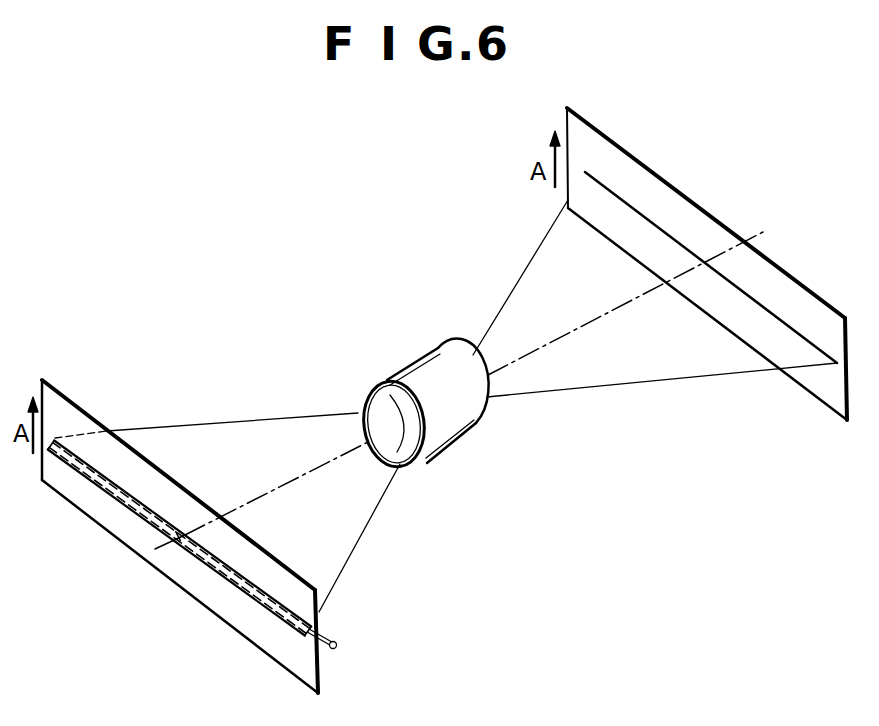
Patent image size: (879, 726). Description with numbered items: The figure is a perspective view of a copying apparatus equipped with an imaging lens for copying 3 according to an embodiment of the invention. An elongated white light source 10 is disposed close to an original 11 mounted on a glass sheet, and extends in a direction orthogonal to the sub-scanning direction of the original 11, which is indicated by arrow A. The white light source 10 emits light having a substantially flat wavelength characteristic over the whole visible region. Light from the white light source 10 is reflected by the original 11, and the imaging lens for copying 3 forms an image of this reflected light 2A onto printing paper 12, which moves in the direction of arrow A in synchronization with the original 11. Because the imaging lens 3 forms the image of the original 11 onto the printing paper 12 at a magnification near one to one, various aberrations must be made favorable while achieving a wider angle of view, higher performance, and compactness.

The printing paper 12 is at (823, 393).
The imaging lens for copying 3 is at (465, 414).
The reflected light 2A is at (371, 518).
The white light source 10 is at (336, 641).
The original 11 is at (320, 670).